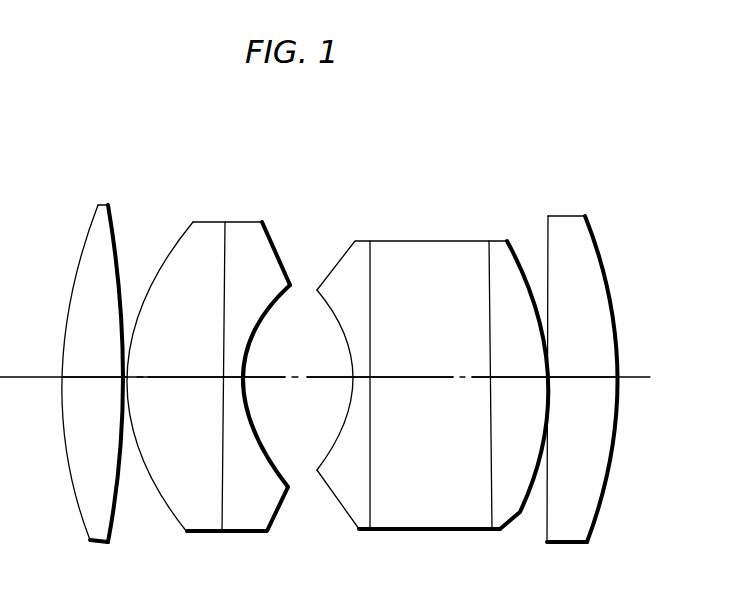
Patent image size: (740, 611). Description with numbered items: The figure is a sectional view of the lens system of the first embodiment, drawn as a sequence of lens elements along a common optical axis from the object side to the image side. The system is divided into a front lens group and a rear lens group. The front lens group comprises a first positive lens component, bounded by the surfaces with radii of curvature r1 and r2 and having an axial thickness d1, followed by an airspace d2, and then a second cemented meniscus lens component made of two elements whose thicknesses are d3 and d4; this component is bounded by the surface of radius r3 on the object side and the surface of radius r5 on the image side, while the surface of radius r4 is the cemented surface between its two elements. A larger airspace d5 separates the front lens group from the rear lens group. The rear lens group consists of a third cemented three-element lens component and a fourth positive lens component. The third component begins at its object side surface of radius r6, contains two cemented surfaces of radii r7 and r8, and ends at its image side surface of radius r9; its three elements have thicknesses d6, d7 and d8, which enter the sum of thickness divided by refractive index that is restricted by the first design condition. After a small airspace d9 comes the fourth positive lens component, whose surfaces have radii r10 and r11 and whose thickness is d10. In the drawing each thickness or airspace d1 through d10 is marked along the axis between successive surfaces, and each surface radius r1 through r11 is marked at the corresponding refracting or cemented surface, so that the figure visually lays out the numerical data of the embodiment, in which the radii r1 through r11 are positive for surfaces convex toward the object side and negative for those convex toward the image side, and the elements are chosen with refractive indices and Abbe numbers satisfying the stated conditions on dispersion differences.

The radius of curvature of the first surface r1 is at (82, 521).
The radius of curvature of the second surface r2 is at (114, 517).
The radius of curvature of the third surface r3 is at (176, 518).
The radius of curvature of the fourth surface r4 is at (223, 517).
The radius of curvature of the fifth surface r5 is at (284, 480).
The radius of curvature of the sixth surface r6 is at (324, 474).
The radius of curvature of the seventh surface r7 is at (371, 512).
The radius of curvature of the eighth surface r8 is at (482, 513).
The radius of curvature of the ninth surface r9 is at (513, 509).
The radius of curvature of the tenth surface r10 is at (548, 517).
The radius of curvature of the eleventh surface r11 is at (597, 514).
The thickness of the first lens element d1 is at (90, 376).
The airspace between the first and second lens components d2 is at (129, 362).
The thickness of the second lens element d3 is at (192, 376).
The thickness of the third lens element d4 is at (233, 376).
The airspace between the second and third lens components d5 is at (312, 376).
The thickness of the fourth lens element d6 is at (362, 376).
The thickness of the fifth lens element d7 is at (428, 376).
The thickness of the sixth lens element d8 is at (522, 376).
The airspace between the third and fourth lens components d9 is at (551, 372).
The thickness of the seventh lens element d10 is at (602, 376).